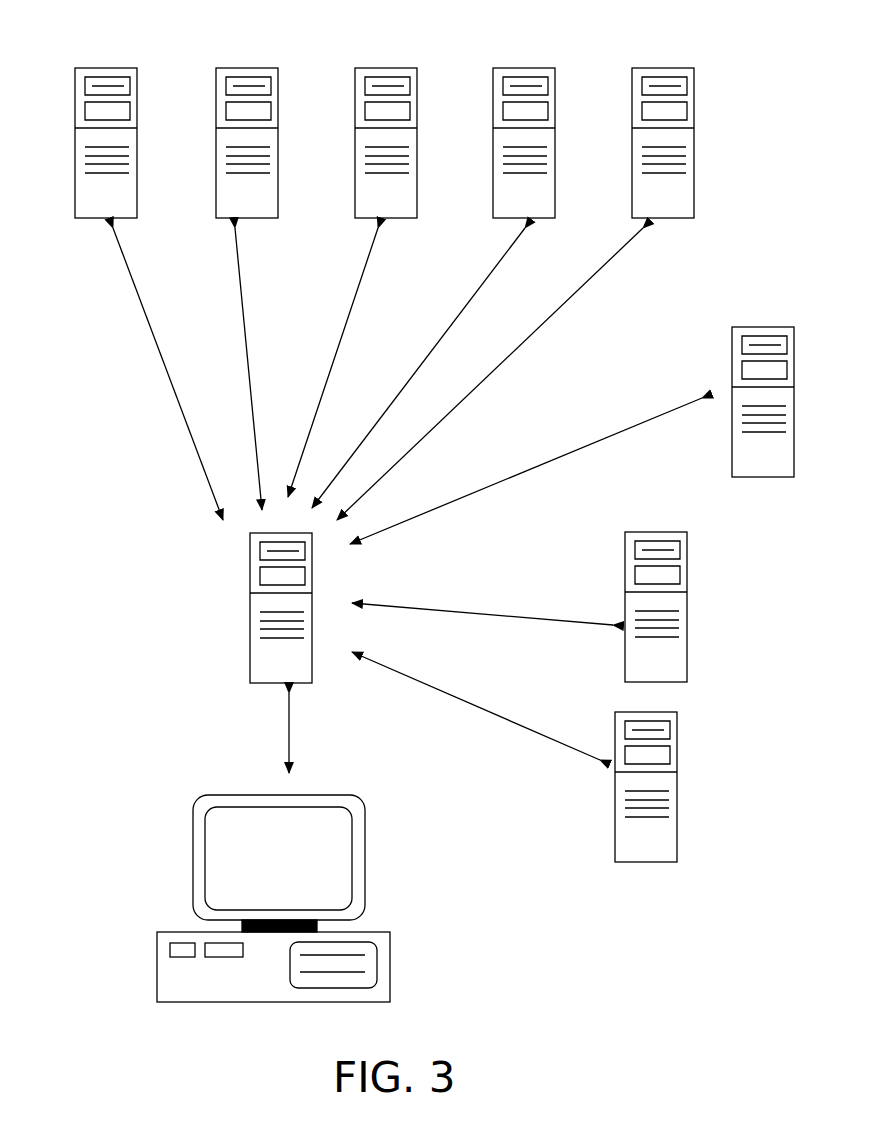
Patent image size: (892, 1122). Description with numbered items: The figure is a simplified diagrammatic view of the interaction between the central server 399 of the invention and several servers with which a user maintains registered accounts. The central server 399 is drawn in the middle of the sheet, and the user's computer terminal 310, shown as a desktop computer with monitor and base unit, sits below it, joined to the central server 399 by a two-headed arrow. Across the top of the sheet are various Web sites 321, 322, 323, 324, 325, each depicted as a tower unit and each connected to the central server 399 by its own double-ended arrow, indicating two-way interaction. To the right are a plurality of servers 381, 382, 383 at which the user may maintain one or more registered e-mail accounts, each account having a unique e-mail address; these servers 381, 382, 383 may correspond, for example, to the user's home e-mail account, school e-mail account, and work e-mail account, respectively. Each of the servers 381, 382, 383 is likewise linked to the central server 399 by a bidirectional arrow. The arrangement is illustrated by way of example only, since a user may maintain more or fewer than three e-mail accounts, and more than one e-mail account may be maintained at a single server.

The computer terminal 310 is at (414, 885).
The Web site 321 is at (113, 66).
The Web site 322 is at (256, 66).
The Web site 323 is at (396, 66).
The Web site 324 is at (539, 66).
The Web site 325 is at (679, 66).
The server 381 is at (780, 326).
The server 382 is at (688, 608).
The server 383 is at (677, 780).
The central server 399 is at (226, 600).